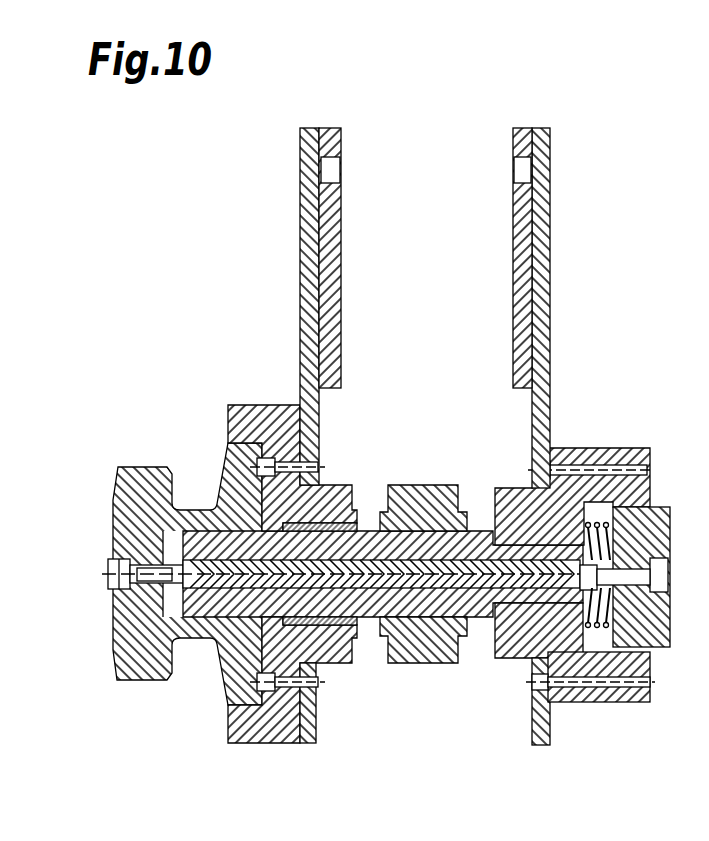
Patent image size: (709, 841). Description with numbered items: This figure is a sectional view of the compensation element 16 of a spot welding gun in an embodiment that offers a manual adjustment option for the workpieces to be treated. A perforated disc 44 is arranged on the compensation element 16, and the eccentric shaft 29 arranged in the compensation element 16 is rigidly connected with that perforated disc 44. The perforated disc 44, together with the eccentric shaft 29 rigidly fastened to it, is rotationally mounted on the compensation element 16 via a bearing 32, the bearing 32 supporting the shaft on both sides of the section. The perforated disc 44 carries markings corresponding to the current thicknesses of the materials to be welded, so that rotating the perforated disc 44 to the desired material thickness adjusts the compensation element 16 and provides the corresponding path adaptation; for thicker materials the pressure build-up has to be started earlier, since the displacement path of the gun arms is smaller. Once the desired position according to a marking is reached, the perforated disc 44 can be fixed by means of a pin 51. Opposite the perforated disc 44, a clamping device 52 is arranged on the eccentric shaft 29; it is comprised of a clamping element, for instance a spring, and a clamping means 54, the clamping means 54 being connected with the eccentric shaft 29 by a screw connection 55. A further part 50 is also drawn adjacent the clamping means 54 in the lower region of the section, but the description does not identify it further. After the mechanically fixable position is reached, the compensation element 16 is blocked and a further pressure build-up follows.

The compensation element 16 is at (270, 215).
The eccentric shaft 29 is at (413, 664).
The bearing 32 is at (331, 678).
The perforated disc 44 is at (140, 632).
The bolt 50 is at (589, 645).
The pin 51 is at (278, 462).
The clamping device 52 is at (607, 513).
The clamping means 54 is at (640, 632).
The screw connection 55 is at (647, 553).